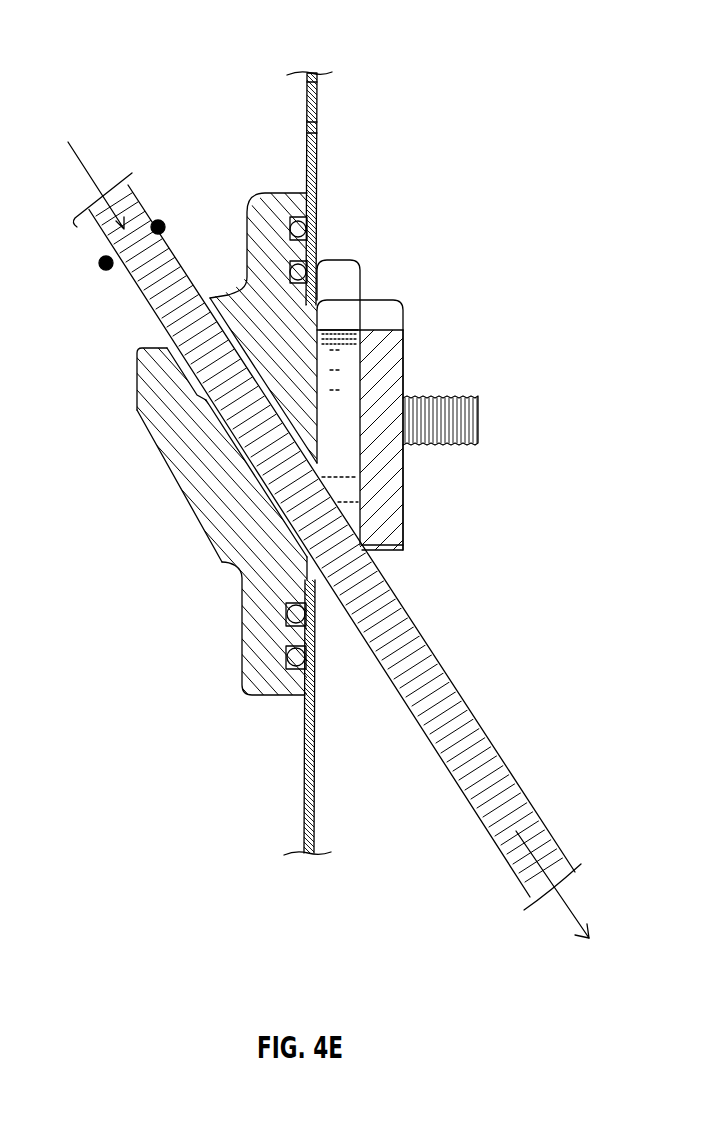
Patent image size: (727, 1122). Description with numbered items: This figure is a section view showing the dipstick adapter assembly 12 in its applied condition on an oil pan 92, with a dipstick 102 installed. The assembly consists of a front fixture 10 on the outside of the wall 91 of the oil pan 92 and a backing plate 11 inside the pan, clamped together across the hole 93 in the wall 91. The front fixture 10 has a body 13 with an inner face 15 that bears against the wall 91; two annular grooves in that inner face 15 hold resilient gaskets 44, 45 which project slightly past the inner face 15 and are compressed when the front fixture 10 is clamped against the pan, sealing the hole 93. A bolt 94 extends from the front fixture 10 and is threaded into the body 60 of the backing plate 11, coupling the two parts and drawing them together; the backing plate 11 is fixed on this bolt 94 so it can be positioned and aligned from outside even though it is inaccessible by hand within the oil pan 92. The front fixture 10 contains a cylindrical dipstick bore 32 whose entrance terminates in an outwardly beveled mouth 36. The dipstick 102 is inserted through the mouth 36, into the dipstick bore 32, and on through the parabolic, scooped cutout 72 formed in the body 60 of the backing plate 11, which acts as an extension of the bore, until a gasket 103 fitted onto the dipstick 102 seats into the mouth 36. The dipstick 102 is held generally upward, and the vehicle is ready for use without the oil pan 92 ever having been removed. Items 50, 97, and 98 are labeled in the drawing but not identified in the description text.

The front fixture 10 is at (192, 522).
The backing plate 11 is at (405, 500).
The dipstick adapter assembly 12 is at (496, 172).
The body 13 is at (262, 193).
The inner face 15 is at (313, 684).
The dipstick bore 32 is at (222, 431).
The mouth 36 is at (160, 346).
The gasket 44 is at (322, 275).
The gasket 45 is at (313, 230).
The lower bearings 50 is at (313, 603).
The body 60 is at (404, 368).
The cutout 72 is at (368, 546).
The wall 91 is at (318, 97).
The oil pan 92 is at (319, 66).
The hole 93 is at (318, 328).
The bolt 94 is at (480, 414).
The pin marking 97 is at (306, 122).
The pin marking 98 is at (318, 133).
The dipstick 102 is at (131, 186).
The gasket 103 is at (166, 219).